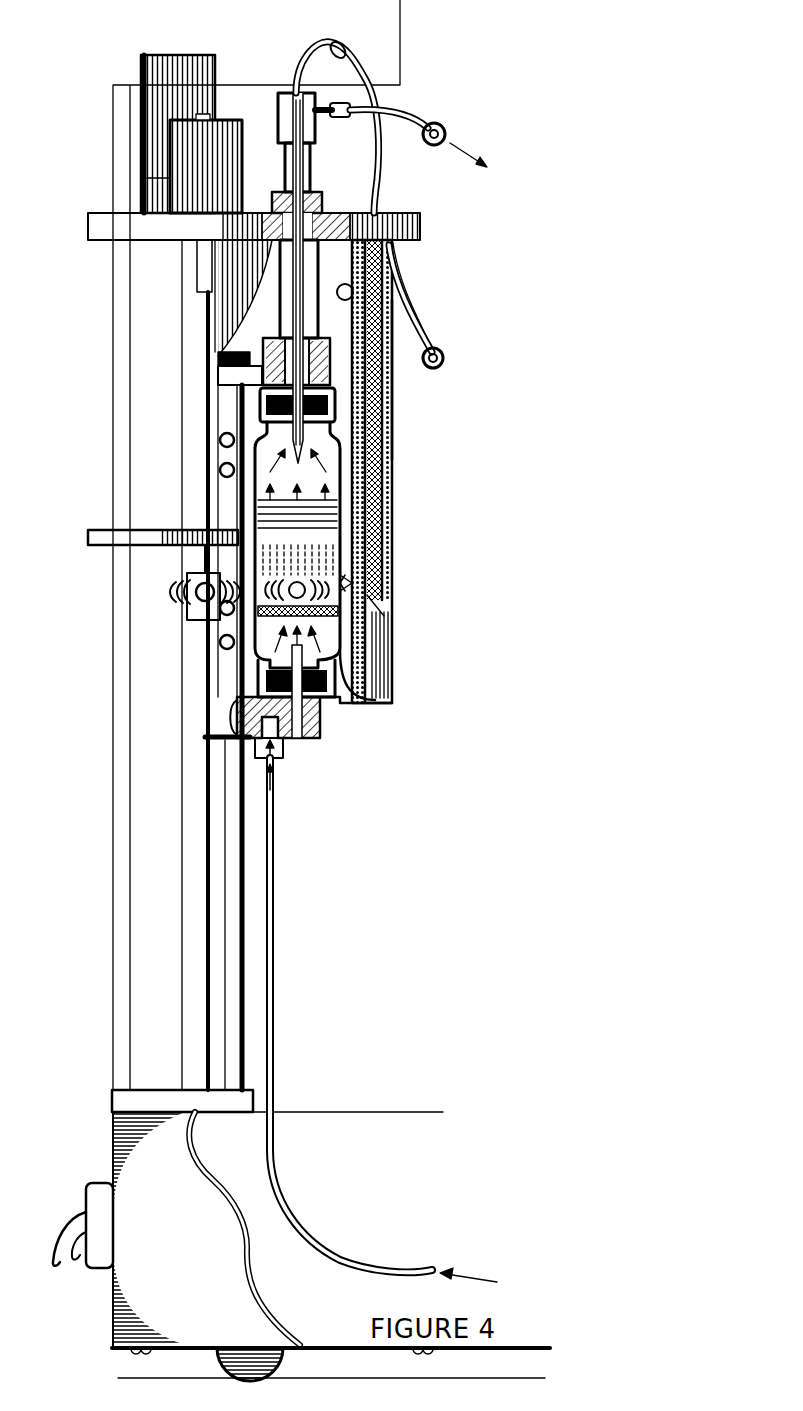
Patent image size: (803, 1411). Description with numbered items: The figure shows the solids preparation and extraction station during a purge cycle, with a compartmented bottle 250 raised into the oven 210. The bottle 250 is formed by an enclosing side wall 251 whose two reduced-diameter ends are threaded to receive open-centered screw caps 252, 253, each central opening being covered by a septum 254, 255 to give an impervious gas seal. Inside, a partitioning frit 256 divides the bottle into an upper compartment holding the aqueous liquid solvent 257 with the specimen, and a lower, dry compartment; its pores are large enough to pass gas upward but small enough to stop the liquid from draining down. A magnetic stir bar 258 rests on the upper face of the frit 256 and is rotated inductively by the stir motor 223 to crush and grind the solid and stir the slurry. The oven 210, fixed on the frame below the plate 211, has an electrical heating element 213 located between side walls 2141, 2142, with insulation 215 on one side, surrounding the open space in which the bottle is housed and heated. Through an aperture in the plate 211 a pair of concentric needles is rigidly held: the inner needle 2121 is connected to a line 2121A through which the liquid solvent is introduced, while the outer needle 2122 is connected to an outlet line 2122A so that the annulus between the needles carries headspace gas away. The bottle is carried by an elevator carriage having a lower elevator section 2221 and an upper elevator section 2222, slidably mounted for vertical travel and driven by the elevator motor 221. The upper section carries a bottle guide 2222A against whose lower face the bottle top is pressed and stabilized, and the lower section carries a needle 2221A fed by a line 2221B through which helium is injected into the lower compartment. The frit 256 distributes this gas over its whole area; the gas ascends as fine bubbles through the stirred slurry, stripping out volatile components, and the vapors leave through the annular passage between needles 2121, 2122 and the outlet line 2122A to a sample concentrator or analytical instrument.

The oven 210 is at (408, 540).
The plate 211 is at (422, 213).
The line 2121A is at (373, 78).
The outlet line 2122A is at (398, 112).
The inner needle 2121 is at (294, 458).
The outer needle 2122 is at (240, 428).
The electrical heating element 213 is at (392, 556).
The side wall 2141 is at (394, 320).
The side wall 2142 is at (392, 283).
The insulation 215 is at (395, 493).
The elevator motor 221 is at (173, 56).
The stir motor 223 is at (222, 120).
The lower elevator section 2221 is at (300, 738).
The upper elevator section 2222 is at (228, 405).
The needle 2221A is at (335, 700).
The line 2221B is at (276, 882).
The bottle guide 2222A is at (393, 384).
The compartmented bottle 250 is at (346, 582).
The side wall 251 is at (347, 606).
The cap 252 is at (336, 412).
The cap 253 is at (330, 688).
The septum 254 is at (342, 455).
The septum 255 is at (322, 672).
The partitioning frit 256 is at (322, 632).
The liquid solvent 257 is at (265, 520).
The magnetic stir bar 258 is at (245, 622).